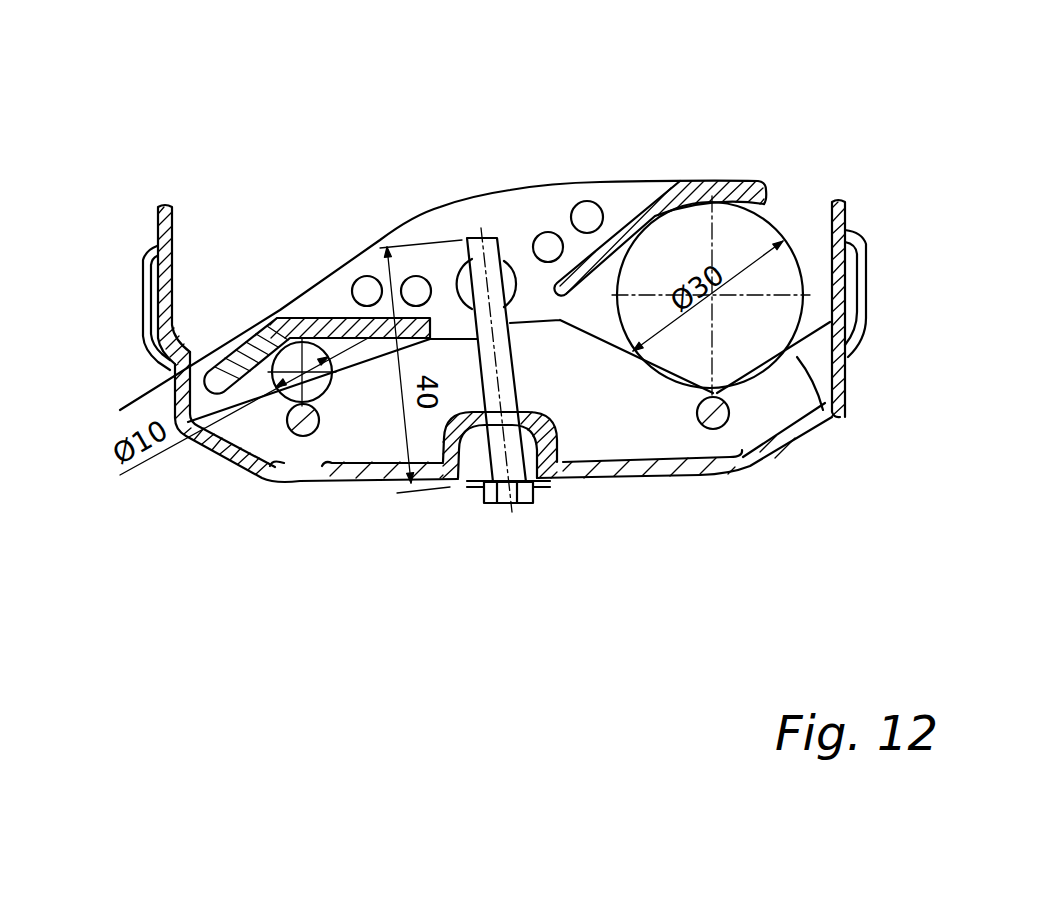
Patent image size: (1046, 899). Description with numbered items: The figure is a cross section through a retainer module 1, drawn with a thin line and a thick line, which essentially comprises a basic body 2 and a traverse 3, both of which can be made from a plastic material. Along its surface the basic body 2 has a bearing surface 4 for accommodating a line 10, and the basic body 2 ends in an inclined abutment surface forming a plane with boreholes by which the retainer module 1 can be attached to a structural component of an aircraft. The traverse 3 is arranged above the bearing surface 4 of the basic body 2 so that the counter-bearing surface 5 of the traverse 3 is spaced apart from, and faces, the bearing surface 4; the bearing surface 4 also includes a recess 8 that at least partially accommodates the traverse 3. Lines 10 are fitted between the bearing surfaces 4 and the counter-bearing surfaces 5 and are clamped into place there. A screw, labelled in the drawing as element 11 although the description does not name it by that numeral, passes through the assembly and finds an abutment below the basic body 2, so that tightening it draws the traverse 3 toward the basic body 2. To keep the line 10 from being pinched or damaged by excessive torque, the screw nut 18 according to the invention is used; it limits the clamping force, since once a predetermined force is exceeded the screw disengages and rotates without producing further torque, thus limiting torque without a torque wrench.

The retainer module 1 is at (352, 140).
The basic body 2 is at (549, 214).
The traverse 3 is at (222, 455).
The bearing surface 4 is at (140, 399).
The counter-bearing surface 5 is at (730, 200).
The recess 8 is at (580, 400).
The line 10 is at (292, 347).
The screw 11 is at (487, 267).
The screw nut 18 is at (458, 273).